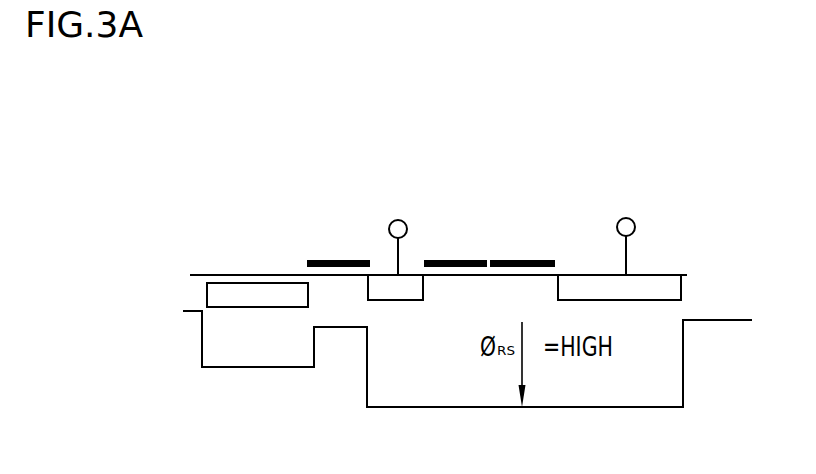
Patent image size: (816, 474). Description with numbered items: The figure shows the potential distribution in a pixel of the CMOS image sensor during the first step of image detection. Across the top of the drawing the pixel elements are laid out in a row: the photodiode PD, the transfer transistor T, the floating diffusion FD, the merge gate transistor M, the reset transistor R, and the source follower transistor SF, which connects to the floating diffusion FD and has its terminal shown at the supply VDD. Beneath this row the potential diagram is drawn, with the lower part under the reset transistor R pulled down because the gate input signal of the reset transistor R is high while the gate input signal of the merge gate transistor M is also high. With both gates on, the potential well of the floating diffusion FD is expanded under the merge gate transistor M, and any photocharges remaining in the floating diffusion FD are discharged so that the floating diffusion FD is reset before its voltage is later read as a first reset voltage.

The photodiode PD is at (257, 295).
The floating diffusion region FD is at (395, 292).
The transfer transistor T is at (338, 249).
The merge gate transistor M is at (455, 249).
The reset transistor R is at (522, 249).
The source follower transistor SF is at (397, 233).
The power supply voltage VDD is at (596, 235).